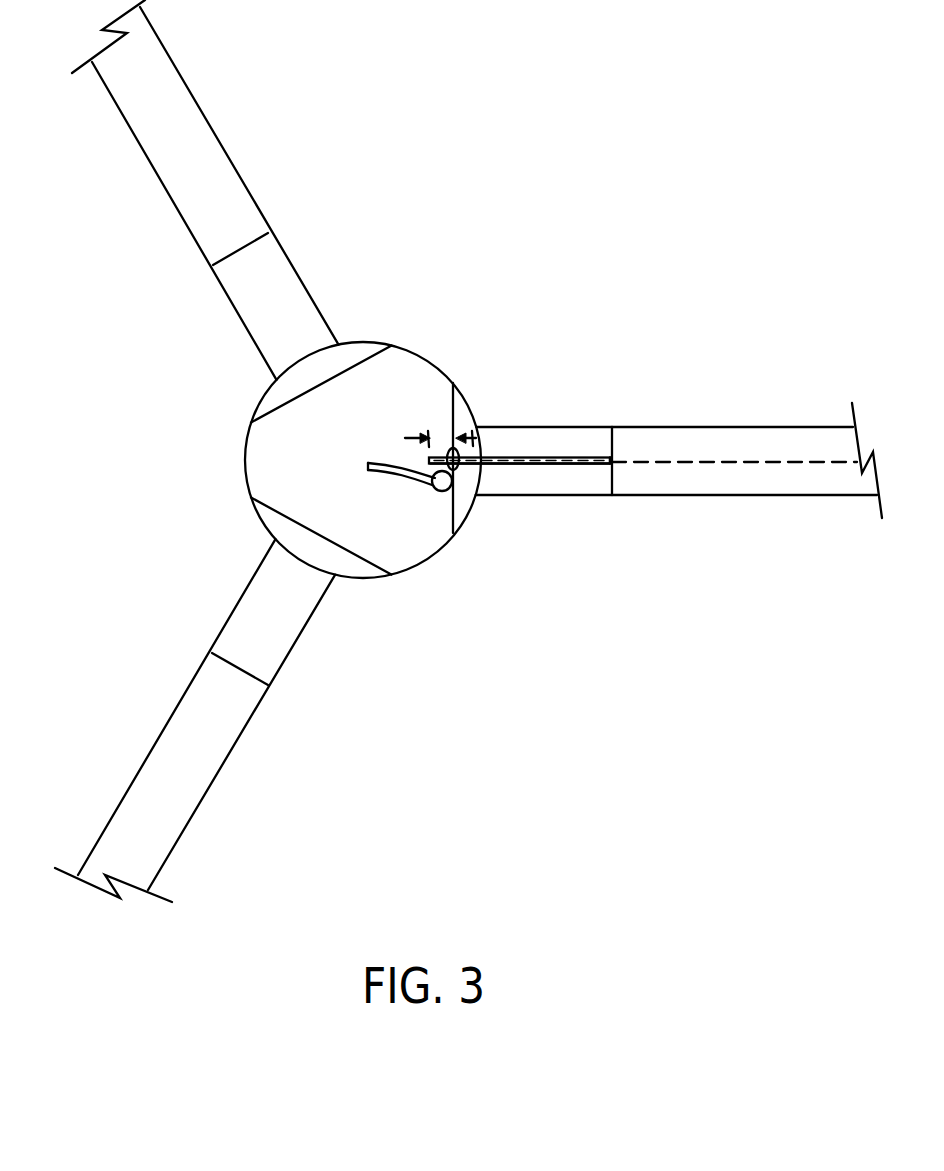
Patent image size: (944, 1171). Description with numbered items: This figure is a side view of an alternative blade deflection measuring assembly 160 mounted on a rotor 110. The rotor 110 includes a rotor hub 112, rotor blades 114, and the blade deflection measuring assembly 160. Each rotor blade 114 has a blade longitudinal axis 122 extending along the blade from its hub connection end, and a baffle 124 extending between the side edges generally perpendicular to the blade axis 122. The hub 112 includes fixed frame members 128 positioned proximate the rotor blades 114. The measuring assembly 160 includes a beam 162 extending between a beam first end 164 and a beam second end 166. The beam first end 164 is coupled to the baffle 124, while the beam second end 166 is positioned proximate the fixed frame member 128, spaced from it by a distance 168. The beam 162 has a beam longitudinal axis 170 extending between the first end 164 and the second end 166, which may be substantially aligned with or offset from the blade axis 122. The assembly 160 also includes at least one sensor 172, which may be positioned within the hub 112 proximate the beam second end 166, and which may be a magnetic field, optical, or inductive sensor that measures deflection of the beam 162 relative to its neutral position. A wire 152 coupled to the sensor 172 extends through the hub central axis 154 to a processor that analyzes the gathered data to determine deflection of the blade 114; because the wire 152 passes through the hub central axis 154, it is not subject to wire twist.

The rotor 110 is at (623, 93).
The rotor hub 112 is at (270, 470).
The rotor blades 114 is at (158, 152).
The blade longitudinal axis 122 is at (671, 463).
The baffle 124 is at (614, 437).
The fixed frame members 128 is at (283, 404).
The wire 152 is at (397, 474).
The hub central axis 154 is at (372, 463).
The blade deflection measuring assembly 160 is at (543, 640).
The beam 162 is at (540, 457).
The beam first end 164 is at (611, 461).
The beam second end 166 is at (429, 459).
The distance 168 is at (462, 448).
The beam longitudinal axis 170 is at (538, 467).
The sensor 172 is at (442, 484).